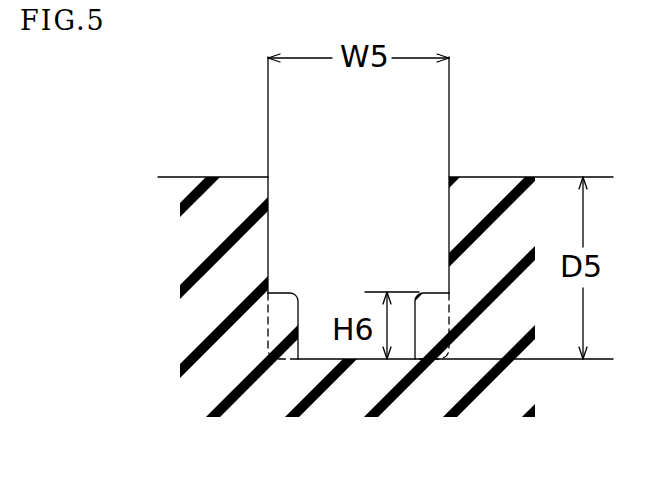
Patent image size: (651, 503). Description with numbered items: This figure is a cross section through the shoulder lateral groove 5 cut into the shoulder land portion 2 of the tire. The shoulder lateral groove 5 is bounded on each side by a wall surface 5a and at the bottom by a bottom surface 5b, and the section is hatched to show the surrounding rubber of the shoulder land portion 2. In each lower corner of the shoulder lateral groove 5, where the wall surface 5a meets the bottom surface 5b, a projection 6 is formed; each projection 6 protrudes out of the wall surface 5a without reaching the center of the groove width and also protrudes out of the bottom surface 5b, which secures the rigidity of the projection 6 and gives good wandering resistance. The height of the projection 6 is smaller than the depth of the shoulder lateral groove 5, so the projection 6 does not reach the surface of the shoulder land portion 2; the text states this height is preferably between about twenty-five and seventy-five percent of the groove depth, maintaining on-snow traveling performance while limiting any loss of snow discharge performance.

The shoulder land portion 2 is at (230, 177).
The shoulder lateral groove 5 is at (361, 213).
The wall surface 5a is at (268, 243).
The bottom surface 5b is at (366, 361).
The projection 6 is at (288, 292).